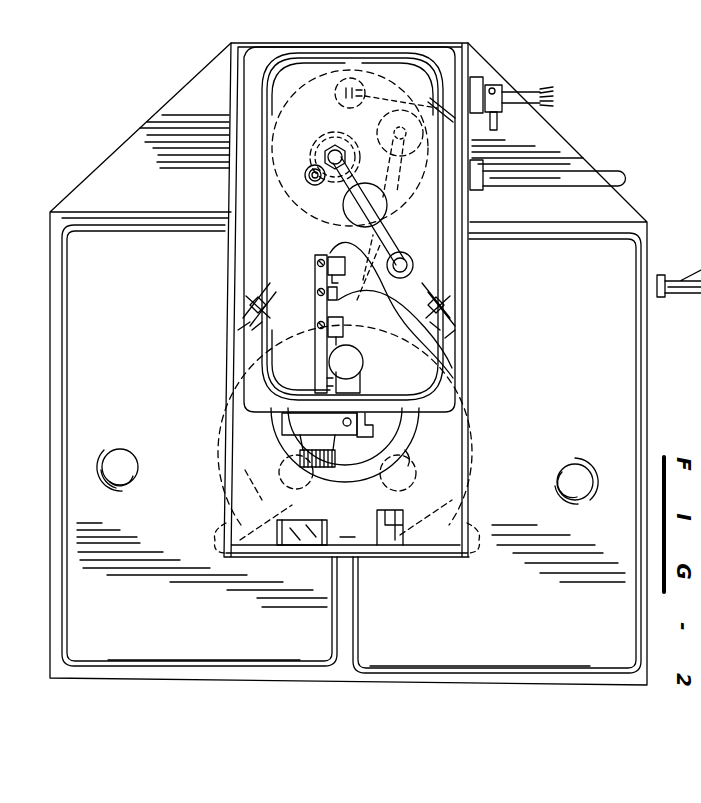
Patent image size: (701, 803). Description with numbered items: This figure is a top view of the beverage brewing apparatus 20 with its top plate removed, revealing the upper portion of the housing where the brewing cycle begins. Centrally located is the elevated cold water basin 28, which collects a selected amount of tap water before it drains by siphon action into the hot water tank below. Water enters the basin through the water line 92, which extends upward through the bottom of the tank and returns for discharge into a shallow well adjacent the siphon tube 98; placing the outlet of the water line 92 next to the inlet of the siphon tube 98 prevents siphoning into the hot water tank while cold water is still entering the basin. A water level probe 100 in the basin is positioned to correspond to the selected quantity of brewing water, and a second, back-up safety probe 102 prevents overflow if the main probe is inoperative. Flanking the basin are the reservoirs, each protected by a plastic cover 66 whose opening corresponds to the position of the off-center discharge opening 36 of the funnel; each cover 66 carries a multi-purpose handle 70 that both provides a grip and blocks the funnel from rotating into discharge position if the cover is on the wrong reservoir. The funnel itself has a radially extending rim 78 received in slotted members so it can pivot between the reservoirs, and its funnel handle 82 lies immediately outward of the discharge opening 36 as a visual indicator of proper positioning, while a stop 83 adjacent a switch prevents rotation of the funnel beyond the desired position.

The beverage brewing apparatus 20 is at (572, 130).
The cold water basin 28 is at (286, 241).
The off-center discharge opening 36 is at (241, 318).
The plastic cover 66 is at (87, 640).
The multi-purpose handle 70 is at (130, 472).
The rim 78 is at (470, 426).
The funnel handle 82 is at (474, 551).
The stop 83 is at (244, 338).
The water line 92 is at (410, 256).
The siphon tube 98 is at (329, 250).
The water level probe 100 is at (314, 268).
The safety probe 102 is at (328, 357).